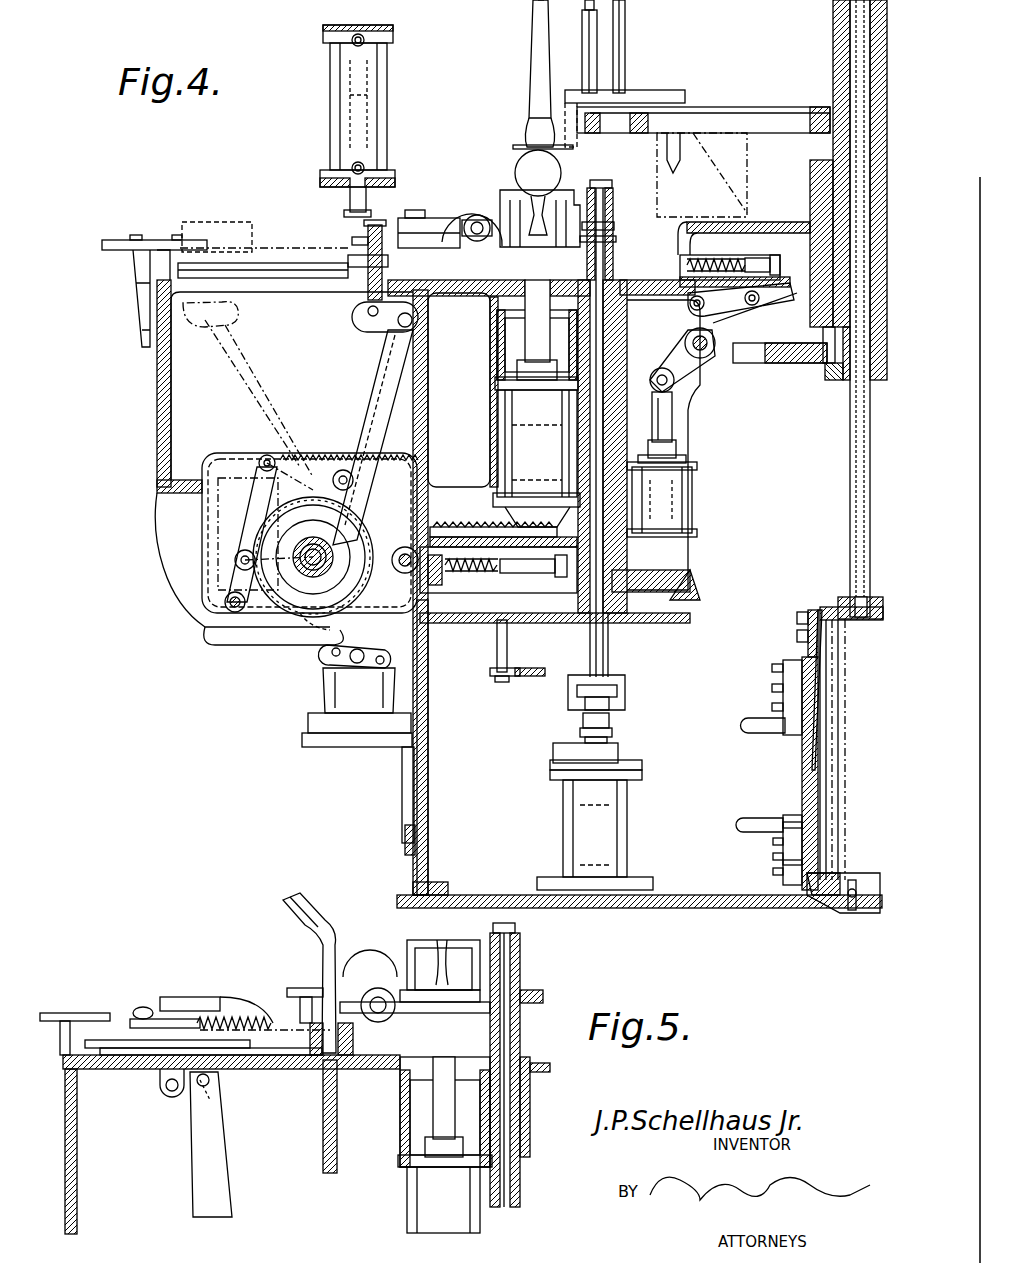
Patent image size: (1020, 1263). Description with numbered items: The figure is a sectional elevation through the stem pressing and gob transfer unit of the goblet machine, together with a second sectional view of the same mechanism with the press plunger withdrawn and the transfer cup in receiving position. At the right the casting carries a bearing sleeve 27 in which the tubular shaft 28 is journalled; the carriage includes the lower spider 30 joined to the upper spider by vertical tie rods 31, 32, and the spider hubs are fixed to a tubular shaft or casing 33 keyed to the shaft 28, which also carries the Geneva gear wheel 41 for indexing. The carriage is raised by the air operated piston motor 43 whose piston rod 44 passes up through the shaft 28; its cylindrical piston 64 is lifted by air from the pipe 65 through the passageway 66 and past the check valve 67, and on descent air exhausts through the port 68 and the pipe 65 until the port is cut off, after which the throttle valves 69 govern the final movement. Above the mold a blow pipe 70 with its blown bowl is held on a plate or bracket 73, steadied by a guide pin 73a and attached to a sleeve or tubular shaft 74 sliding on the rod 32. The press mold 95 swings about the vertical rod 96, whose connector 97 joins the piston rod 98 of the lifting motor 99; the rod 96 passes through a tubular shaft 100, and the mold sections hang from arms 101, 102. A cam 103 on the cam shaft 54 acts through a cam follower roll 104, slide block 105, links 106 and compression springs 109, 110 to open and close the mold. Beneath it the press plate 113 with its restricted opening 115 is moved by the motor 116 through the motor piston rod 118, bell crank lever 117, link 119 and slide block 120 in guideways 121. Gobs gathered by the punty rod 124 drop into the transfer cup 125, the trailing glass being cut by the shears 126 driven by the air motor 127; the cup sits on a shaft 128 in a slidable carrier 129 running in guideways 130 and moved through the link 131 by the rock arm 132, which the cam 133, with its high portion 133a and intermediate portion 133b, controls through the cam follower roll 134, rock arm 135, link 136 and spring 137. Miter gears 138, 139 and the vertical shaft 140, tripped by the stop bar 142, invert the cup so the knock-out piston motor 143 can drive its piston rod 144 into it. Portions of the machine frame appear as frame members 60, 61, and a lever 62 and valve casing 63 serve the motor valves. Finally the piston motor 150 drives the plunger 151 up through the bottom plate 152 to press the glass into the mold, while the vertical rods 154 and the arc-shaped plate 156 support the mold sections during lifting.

In FIG. 4, the bearing sleeve 27 is at (810, 172).
In FIG. 4, the tubular shaft 28 is at (833, 42).
In FIG. 4, the lower spider 30 is at (725, 110).
In FIG. 4, the vertical tie rod 31 is at (625, 47).
In FIG. 4, the vertical tie rod 32 is at (580, 3).
In FIG. 4, the tubular shaft or casing 33 is at (833, 17).
In FIG. 4, the Geneva gear wheel 41 is at (808, 365).
In FIG. 4, the air operated piston motor 43 is at (802, 770).
In FIG. 4, the piston rod 44 is at (857, 468).
In FIG. 4, the cam shaft 54 is at (285, 588).
In FIG. 4, the frame 60 is at (428, 700).
In FIG. 5, the frame 60 is at (77, 1168).
In FIG. 4, the frame wall 61 is at (160, 424).
In FIG. 4, the lever 62 is at (325, 652).
In FIG. 4, the valve casing 63 is at (330, 700).
In FIG. 4, the cylindrical piston 64 is at (802, 748).
In FIG. 4, the pipe 65 is at (745, 826).
In FIG. 4, the passageway 66 is at (818, 905).
In FIG. 4, the check valve 67 is at (852, 905).
In FIG. 4, the port 68 is at (798, 831).
In FIG. 4, the throttle valves 69 is at (790, 862).
In FIG. 4, the blow pipes 70 is at (533, 63).
In FIG. 4, the plate or bracket 73 is at (660, 92).
In FIG. 4, the guide pin 73a is at (675, 168).
In FIG. 4, the sleeve or tubular shaft 74 is at (585, 59).
In FIG. 4, the press mold 95 is at (562, 190).
In FIG. 5, the press mold 95 is at (425, 950).
In FIG. 4, the vertical rod 96 is at (606, 198).
In FIG. 5, the vertical rod 96 is at (512, 1016).
In FIG. 4, the connector 97 is at (615, 678).
In FIG. 4, the piston rod 98 is at (610, 728).
In FIG. 4, the air operated piston motor 99 is at (626, 827).
In FIG. 4, the tubular shaft 100 is at (612, 337).
In FIG. 5, the tubular shaft 100 is at (522, 1106).
In FIG. 4, the arm 101 is at (614, 226).
In FIG. 4, the arm 102 is at (616, 240).
In FIG. 4, the cam 103 is at (358, 512).
In FIG. 4, the cam follower roll 104 is at (405, 548).
In FIG. 4, the slide block 105 is at (481, 590).
In FIG. 4, the links 106 is at (540, 579).
In FIG. 4, the compression spring 109 is at (490, 580).
In FIG. 4, the compression spring 110 is at (472, 527).
In FIG. 4, the press plate 113 is at (540, 218).
In FIG. 4, the restricted opening 115 is at (556, 223).
In FIG. 4, the air operated piston motor 116 is at (683, 500).
In FIG. 4, the bell crank lever 117 is at (695, 372).
In FIG. 4, the motor piston rod 118 is at (673, 420).
In FIG. 4, the link 119 is at (730, 313).
In FIG. 4, the slide block 120 is at (740, 258).
In FIG. 4, the guideways 121 is at (760, 280).
In FIG. 5, the punty rod 124 is at (290, 916).
In FIG. 5, the transfer cup 125 is at (312, 1062).
In FIG. 4, the shears 126 is at (418, 218).
In FIG. 5, the shears 126 is at (293, 990).
In FIG. 4, the air motor 127 is at (483, 205).
In FIG. 5, the air motor 127 is at (372, 980).
In FIG. 4, the shaft 128 is at (475, 392).
In FIG. 4, the slidable carrier 129 is at (451, 592).
In FIG. 4, the guideways 130 is at (300, 246).
In FIG. 5, the guideways 130 is at (122, 1058).
In FIG. 4, the link 131 is at (377, 325).
In FIG. 4, the rock arm 132 is at (367, 380).
In FIG. 5, the rock arm 132 is at (215, 1160).
In FIG. 4, the cam 133 is at (360, 610).
In FIG. 4, the high portion 133a is at (282, 641).
In FIG. 4, the intermediate portion 133b is at (362, 527).
In FIG. 4, the cam follower roll 134 is at (250, 527).
In FIG. 4, the rock arm 135 is at (265, 470).
In FIG. 4, the link 136 is at (298, 460).
In FIG. 4, the spring 137 is at (338, 470).
In FIG. 4, the miter gear 138 is at (383, 235).
In FIG. 5, the miter gear 138 is at (209, 1081).
In FIG. 4, the miter gear 139 is at (352, 240).
In FIG. 4, the vertical shaft 140 is at (370, 290).
In FIG. 4, the stop bar 142 is at (160, 240).
In FIG. 4, the piston motor 143 is at (388, 102).
In FIG. 4, the piston rod 144 is at (348, 205).
In FIG. 4, the piston motor 150 is at (522, 419).
In FIG. 5, the piston motor 150 is at (410, 1200).
In FIG. 4, the plunger 151 is at (517, 358).
In FIG. 5, the plunger 151 is at (432, 1108).
In FIG. 4, the bottom plate 152 is at (520, 339).
In FIG. 5, the bottom plate 152 is at (400, 1080).
In FIG. 4, the vertical rods 154 is at (497, 662).
In FIG. 5, the plate 156 is at (540, 990).